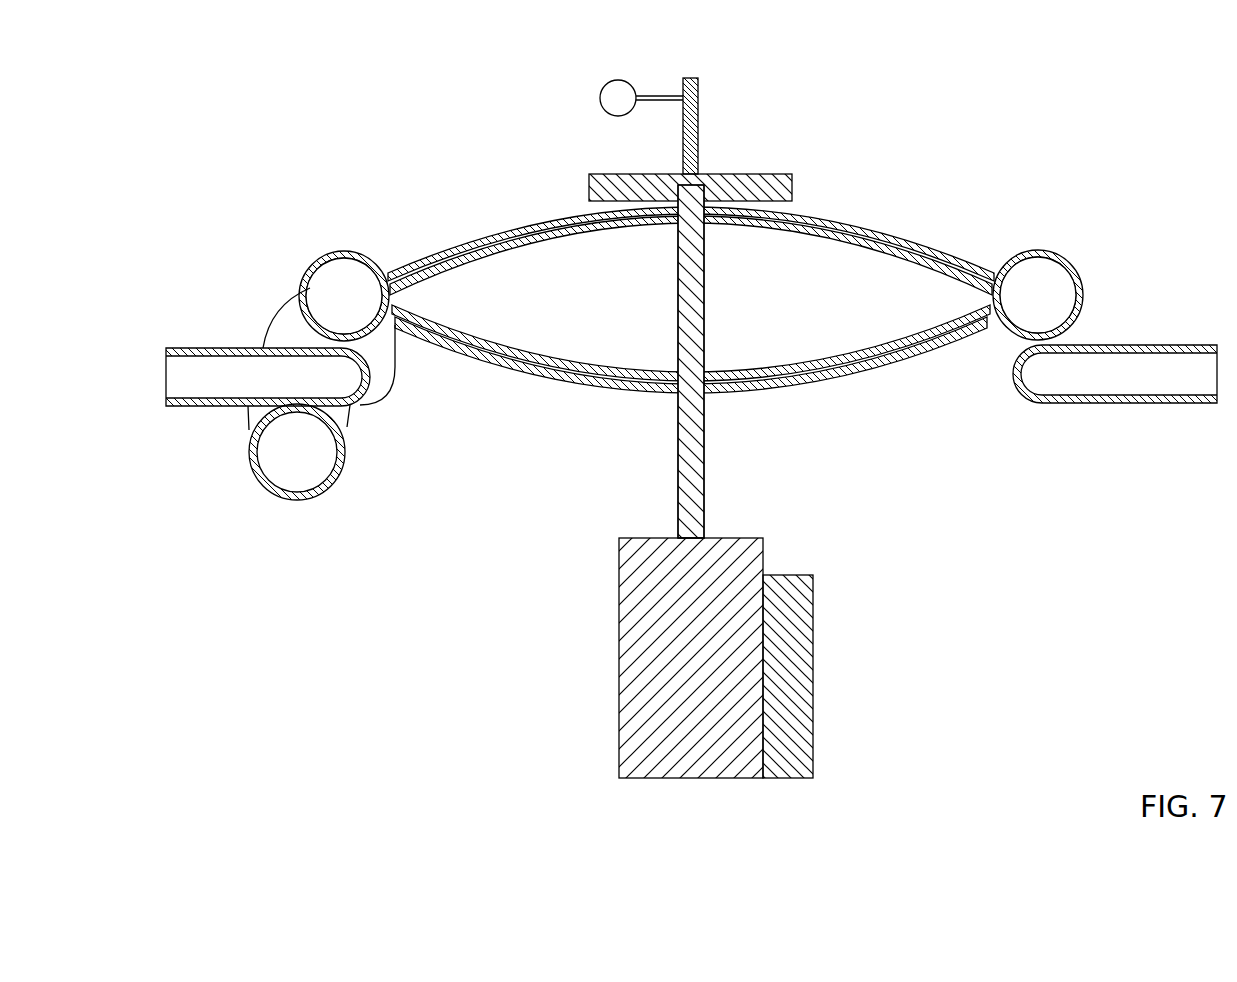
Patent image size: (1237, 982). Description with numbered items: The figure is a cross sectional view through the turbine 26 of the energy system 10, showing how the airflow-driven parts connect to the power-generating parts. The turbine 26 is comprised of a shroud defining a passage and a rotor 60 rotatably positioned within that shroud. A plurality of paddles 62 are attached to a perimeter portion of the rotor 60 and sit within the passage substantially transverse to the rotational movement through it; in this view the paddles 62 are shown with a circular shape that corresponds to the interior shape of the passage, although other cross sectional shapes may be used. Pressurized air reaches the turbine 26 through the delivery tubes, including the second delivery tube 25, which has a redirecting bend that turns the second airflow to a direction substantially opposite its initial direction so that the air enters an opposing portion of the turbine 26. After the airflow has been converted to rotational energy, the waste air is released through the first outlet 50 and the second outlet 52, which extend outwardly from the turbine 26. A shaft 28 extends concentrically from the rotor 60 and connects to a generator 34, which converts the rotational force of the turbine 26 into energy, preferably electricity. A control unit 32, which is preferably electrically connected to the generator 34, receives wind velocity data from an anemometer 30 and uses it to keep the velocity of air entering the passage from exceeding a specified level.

The energy system 10 is at (230, 133).
The second delivery tube 25 is at (350, 420).
The turbine 26 is at (878, 212).
The shaft 28 is at (704, 421).
The anemometer 30 is at (704, 100).
The control unit 32 is at (813, 695).
The generator 34 is at (619, 660).
The first outlet 50 is at (195, 408).
The second outlet 52 is at (1132, 405).
The rotor 60 is at (512, 242).
The paddles 62 is at (310, 290).